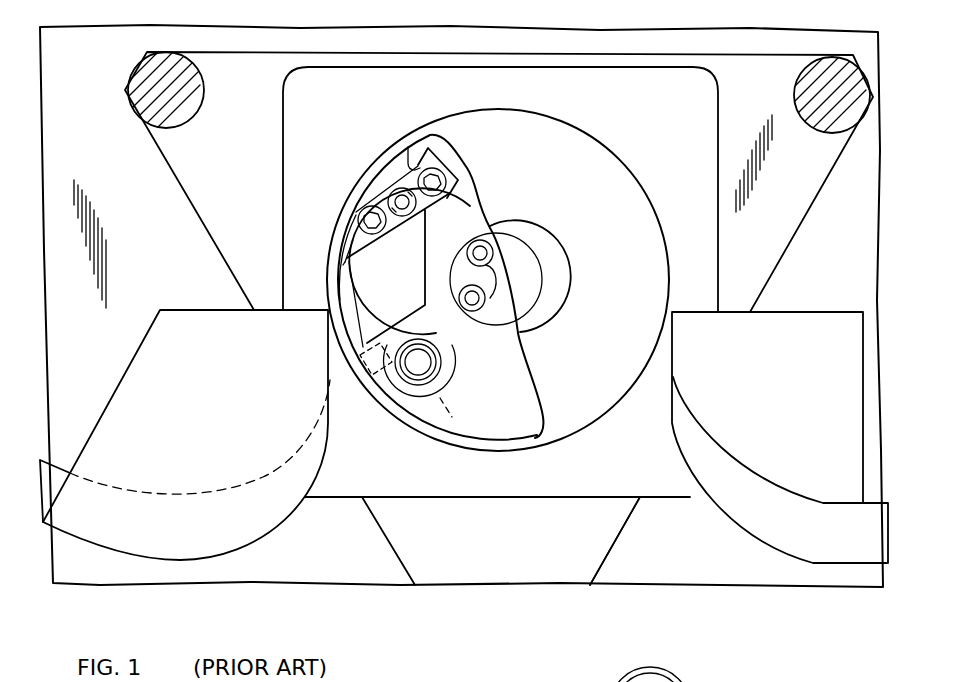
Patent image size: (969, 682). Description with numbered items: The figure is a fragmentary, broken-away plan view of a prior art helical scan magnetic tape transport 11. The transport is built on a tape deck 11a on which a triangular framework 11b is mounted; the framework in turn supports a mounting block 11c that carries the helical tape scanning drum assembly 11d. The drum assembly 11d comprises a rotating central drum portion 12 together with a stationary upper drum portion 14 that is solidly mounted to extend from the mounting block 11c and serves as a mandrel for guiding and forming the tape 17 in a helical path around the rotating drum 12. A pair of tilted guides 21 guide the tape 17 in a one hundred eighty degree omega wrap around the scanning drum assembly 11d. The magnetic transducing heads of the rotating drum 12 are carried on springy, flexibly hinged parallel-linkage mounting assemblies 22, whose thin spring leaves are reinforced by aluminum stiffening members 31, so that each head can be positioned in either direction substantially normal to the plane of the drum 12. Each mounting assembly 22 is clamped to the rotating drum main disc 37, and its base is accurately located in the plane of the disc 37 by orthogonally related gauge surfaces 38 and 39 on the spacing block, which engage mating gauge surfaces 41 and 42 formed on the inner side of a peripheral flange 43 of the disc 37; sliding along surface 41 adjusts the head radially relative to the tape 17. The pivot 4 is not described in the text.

The pivot pin 4 is at (455, 423).
The magnetic tape transport 11 is at (727, 598).
The tape deck 11a is at (652, 553).
The triangular framework 11b is at (527, 550).
The mounting block 11c is at (600, 476).
The helical tape scanning drum assembly 11d is at (627, 152).
The rotating central drum portion 12 is at (476, 408).
The stationary upper drum portion 14 is at (594, 303).
The tape 17 is at (287, 520).
The tilted guides 21 is at (174, 418).
The parallel-linkage mounting assembly 22 is at (347, 322).
The aluminum stiffening member 31 is at (373, 290).
The rotating drum main disc 37 is at (330, 238).
The gauge surface 38 is at (403, 183).
The gauge surface 39 is at (407, 150).
The gauge surface 41 is at (380, 197).
The gauge surface 42 is at (418, 160).
The peripheral flange 43 is at (352, 203).